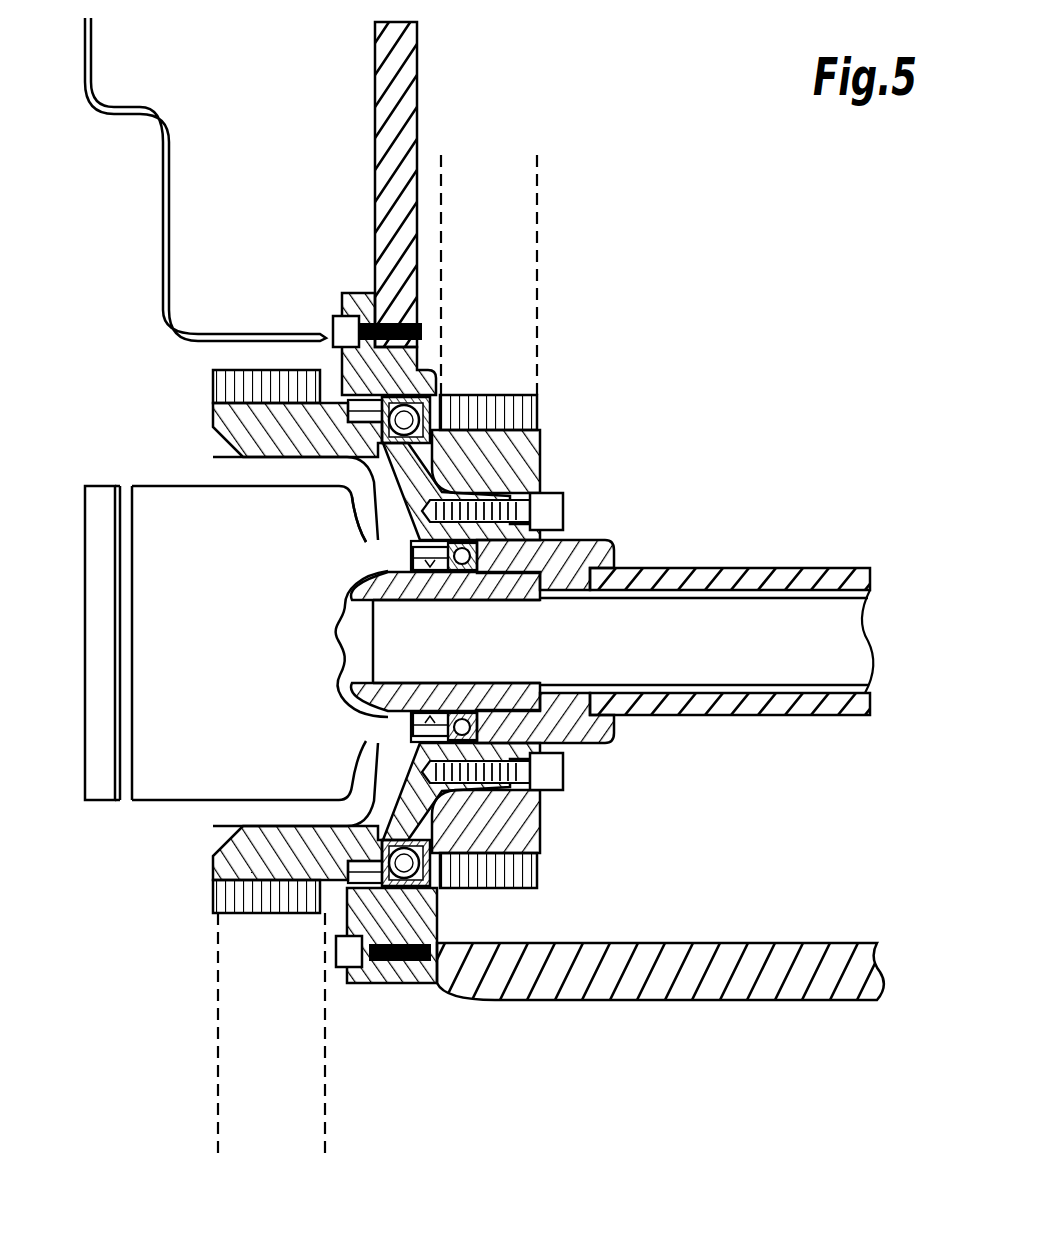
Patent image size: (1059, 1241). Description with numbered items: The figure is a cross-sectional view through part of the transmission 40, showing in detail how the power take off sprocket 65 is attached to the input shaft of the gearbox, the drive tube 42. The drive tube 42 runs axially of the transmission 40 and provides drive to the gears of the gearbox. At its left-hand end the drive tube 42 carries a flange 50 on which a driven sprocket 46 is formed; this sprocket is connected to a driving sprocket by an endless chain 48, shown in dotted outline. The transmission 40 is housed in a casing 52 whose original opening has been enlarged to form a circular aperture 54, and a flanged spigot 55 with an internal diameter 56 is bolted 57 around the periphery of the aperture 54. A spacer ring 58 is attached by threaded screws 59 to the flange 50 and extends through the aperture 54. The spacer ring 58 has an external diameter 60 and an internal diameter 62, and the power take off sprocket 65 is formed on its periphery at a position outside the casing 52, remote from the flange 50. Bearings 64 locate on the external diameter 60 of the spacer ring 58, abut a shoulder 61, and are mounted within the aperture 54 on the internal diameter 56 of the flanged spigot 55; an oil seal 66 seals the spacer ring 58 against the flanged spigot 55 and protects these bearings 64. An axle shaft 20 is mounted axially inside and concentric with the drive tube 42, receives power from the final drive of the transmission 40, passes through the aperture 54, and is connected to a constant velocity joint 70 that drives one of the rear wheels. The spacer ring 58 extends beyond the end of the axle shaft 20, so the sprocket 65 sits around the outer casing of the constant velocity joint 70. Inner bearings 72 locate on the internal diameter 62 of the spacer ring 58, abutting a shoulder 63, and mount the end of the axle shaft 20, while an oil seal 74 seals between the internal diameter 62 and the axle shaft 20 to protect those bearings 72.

The axle shaft 20 is at (815, 568).
The transmission 40 is at (708, 337).
The drive tube 42 is at (740, 568).
The driven sprocket 46 is at (520, 410).
The endless chain 48 is at (537, 207).
The flange 50 is at (525, 445).
The casing 52 is at (680, 985).
The aperture 54 is at (391, 642).
The flanged spigot 55 is at (358, 298).
The internal diameter 56 is at (342, 350).
The bolts 57 is at (400, 320).
The spacer ring 58 is at (240, 840).
The threaded screws 59 is at (540, 488).
The external diameter 60 is at (370, 462).
The shoulder 61 is at (375, 438).
The internal diameter 62 is at (412, 555).
The shoulder 63 is at (552, 508).
The bearings 64 is at (405, 415).
The power take off sprocket 65 is at (230, 390).
The oil seal 66 is at (373, 432).
The constant velocity joint 70 is at (165, 622).
The bearings 72 is at (470, 712).
The oil seal 74 is at (437, 708).